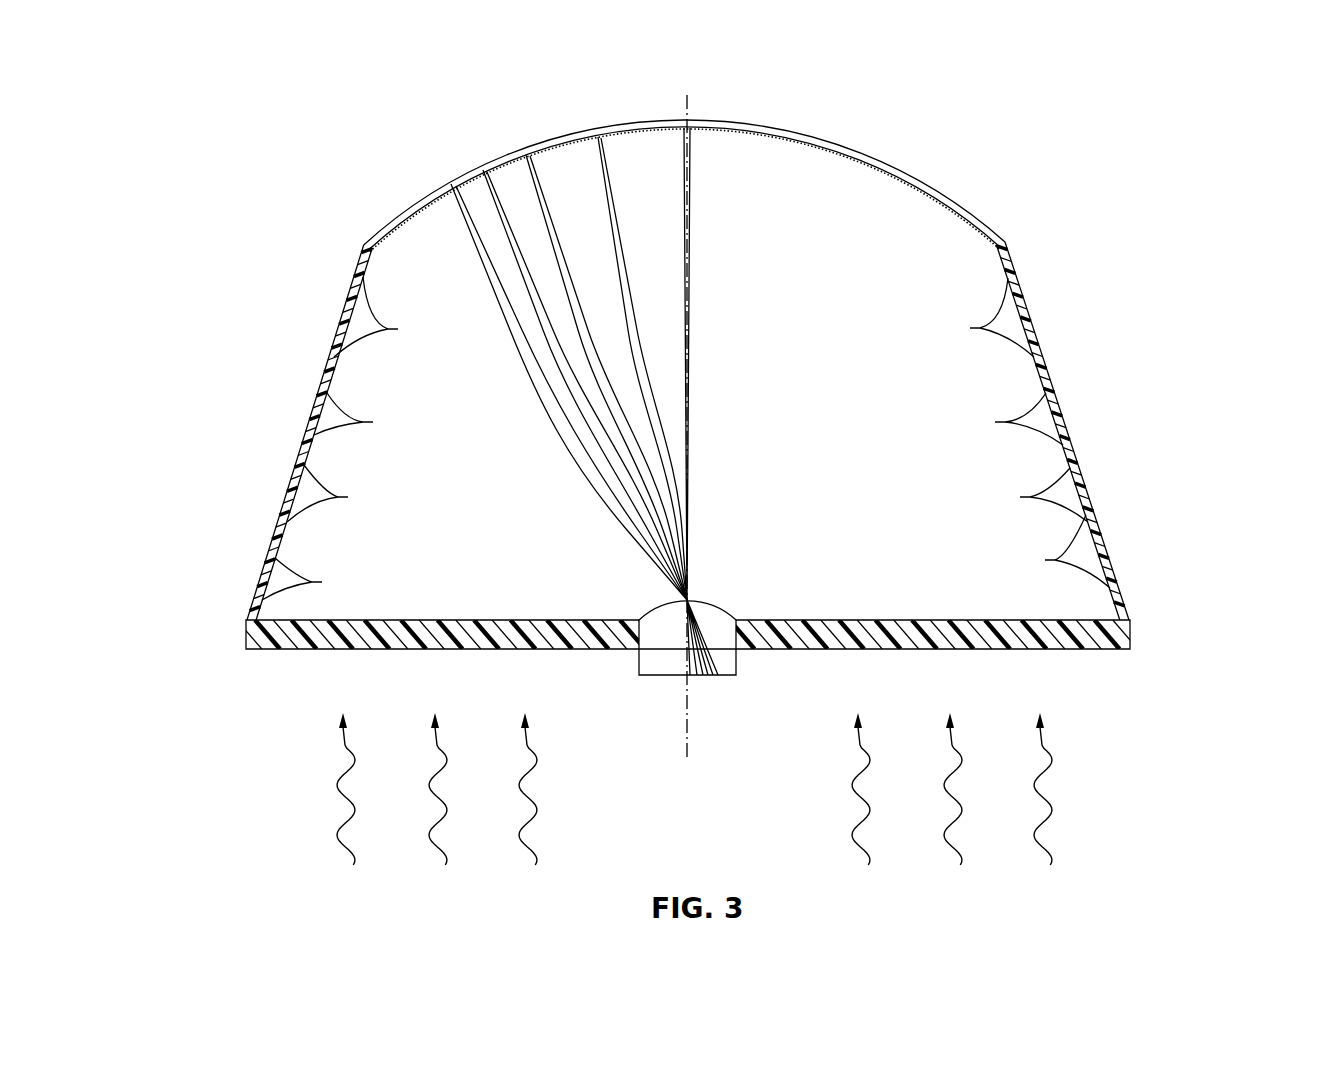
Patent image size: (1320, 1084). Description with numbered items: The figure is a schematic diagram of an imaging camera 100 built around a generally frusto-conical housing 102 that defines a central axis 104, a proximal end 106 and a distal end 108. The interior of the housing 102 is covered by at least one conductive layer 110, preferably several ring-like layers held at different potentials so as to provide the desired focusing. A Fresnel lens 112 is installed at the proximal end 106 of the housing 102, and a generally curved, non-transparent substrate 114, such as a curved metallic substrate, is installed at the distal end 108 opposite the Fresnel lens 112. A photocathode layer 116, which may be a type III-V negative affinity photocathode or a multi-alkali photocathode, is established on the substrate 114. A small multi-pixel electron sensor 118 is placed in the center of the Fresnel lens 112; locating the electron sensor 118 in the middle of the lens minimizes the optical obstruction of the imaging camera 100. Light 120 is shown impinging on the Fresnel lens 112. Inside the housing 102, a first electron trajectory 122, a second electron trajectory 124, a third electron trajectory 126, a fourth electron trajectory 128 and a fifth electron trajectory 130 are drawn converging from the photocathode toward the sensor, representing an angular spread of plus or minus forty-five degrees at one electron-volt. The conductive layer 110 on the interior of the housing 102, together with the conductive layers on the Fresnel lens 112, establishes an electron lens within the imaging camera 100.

The imaging camera 100 is at (288, 160).
The housing 102 is at (1076, 465).
The central axis 104 is at (689, 103).
The proximal end 106 is at (1152, 613).
The distal end 108 is at (1032, 243).
The conductive layer 110 is at (686, 438).
The Fresnel lens 112 is at (845, 650).
The substrate 114 is at (913, 173).
The photocathode layer 116 is at (873, 160).
The multi-pixel electron sensor 118 is at (657, 665).
The light 120 is at (343, 850).
The first electron trajectory 122 is at (523, 358).
The second electron trajectory 124 is at (528, 292).
The third electron trajectory 126 is at (550, 240).
The fourth electron trajectory 128 is at (600, 163).
The fifth electron trajectory 130 is at (689, 250).